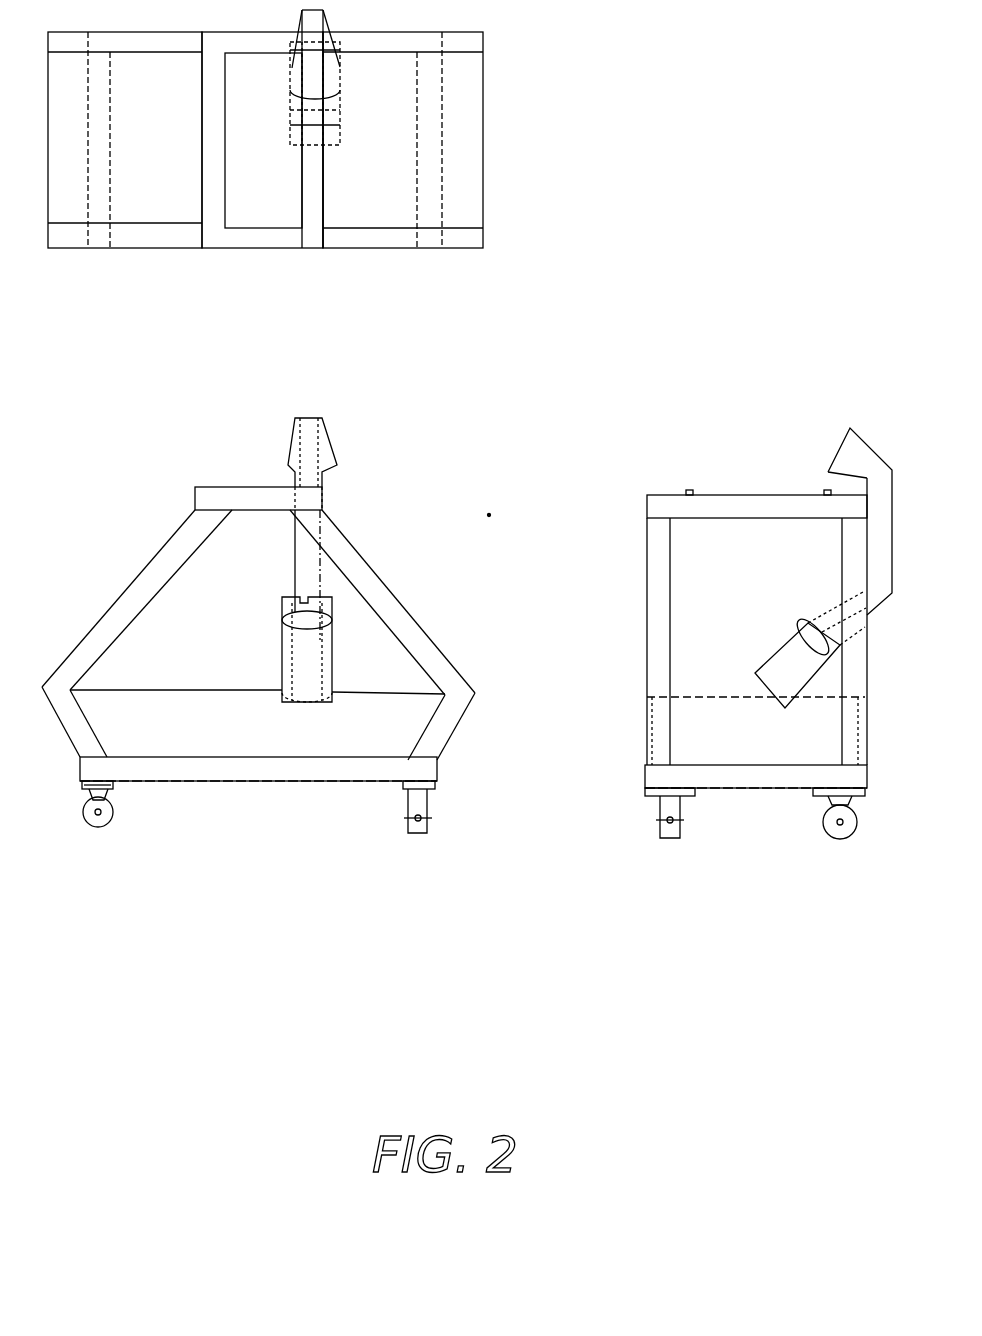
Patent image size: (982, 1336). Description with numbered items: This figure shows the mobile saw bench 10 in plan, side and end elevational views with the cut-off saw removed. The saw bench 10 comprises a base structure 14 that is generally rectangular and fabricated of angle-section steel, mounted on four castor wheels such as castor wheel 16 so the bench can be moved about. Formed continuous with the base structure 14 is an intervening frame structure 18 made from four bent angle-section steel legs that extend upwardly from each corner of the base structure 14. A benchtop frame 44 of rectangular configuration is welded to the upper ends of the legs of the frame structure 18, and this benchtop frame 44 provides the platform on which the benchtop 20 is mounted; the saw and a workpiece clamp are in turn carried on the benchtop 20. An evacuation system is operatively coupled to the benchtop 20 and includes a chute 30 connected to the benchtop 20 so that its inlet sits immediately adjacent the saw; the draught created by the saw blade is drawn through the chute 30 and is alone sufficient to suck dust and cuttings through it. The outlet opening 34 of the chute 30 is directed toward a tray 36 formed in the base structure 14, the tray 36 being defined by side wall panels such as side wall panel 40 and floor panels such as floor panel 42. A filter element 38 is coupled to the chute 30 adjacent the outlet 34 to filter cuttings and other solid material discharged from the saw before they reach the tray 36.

The mobile saw bench 10 is at (311, 636).
The base structure 14 is at (458, 785).
The castor wheels 16 is at (107, 797).
The intervening frame structure 18 is at (388, 615).
The benchtop 20 is at (356, 177).
The chute 30 is at (865, 518).
The outlet opening 34 is at (324, 706).
The tray 36 is at (198, 684).
The filter element 38 is at (760, 640).
The side wall panel 40 is at (292, 742).
The floor panel 42 is at (185, 785).
The benchtop frame 44 is at (248, 502).